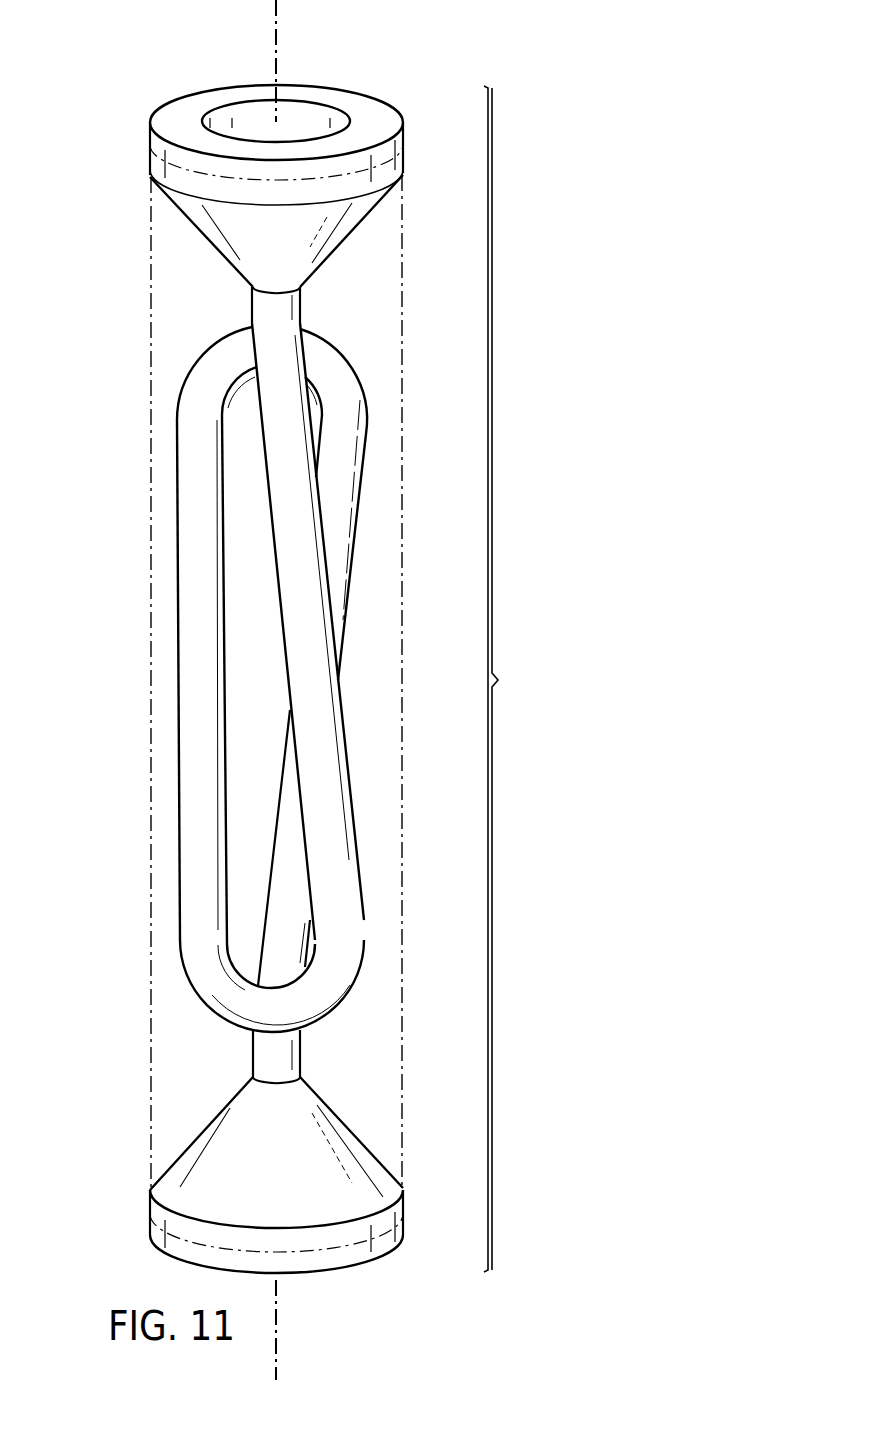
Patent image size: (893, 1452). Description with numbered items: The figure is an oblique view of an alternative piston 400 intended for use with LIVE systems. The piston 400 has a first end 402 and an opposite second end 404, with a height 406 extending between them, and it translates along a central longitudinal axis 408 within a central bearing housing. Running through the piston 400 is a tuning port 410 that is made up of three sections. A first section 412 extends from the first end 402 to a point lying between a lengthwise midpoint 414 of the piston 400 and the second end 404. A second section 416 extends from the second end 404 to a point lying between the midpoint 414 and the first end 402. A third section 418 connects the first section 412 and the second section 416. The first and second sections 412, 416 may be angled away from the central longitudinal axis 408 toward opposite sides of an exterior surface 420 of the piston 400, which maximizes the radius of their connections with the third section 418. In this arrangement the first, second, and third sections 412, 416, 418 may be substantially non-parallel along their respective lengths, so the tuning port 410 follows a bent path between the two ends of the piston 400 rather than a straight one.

The piston 400 is at (141, 74).
The first end 402 is at (364, 103).
The second end 404 is at (323, 1273).
The height 406 is at (514, 679).
The central longitudinal axis 408 is at (278, 22).
The tuning port 410 is at (340, 368).
The first section 412 is at (272, 447).
The lengthwise midpoint 414 is at (275, 680).
The second section 416 is at (345, 503).
The third section 418 is at (190, 525).
The exterior surface 420 is at (150, 984).